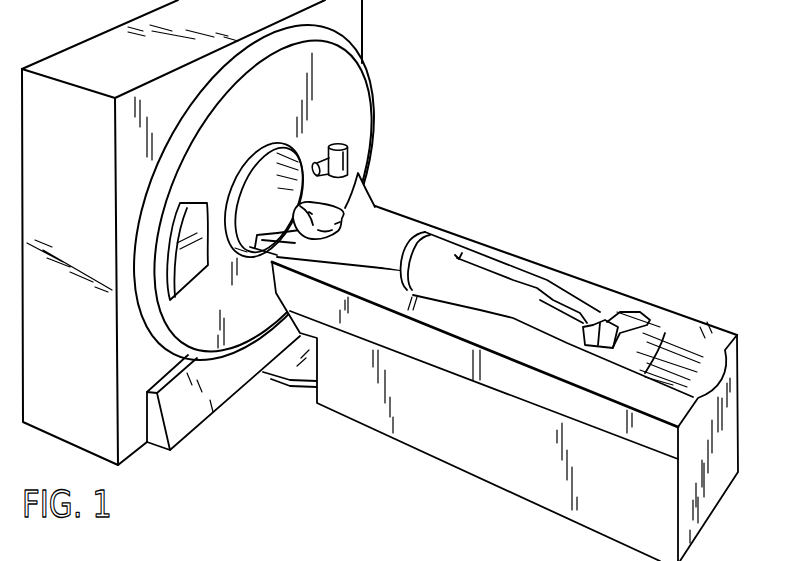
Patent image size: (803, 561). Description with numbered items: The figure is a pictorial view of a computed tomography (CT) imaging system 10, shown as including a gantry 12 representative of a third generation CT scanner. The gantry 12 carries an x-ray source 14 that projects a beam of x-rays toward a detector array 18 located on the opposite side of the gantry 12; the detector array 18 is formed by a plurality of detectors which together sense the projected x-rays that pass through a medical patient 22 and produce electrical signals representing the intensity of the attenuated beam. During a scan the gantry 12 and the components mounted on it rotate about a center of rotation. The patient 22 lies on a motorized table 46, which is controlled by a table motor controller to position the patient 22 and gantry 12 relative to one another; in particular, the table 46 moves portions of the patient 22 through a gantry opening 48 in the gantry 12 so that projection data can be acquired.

The computed tomography (CT) imaging system 10 is at (380, 280).
The gantry 12 is at (353, 113).
The x-ray source 14 is at (347, 162).
The detector array 18 is at (195, 276).
The medical patient 22 is at (403, 233).
The motorized table 46 is at (488, 468).
The gantry opening 48 is at (251, 189).